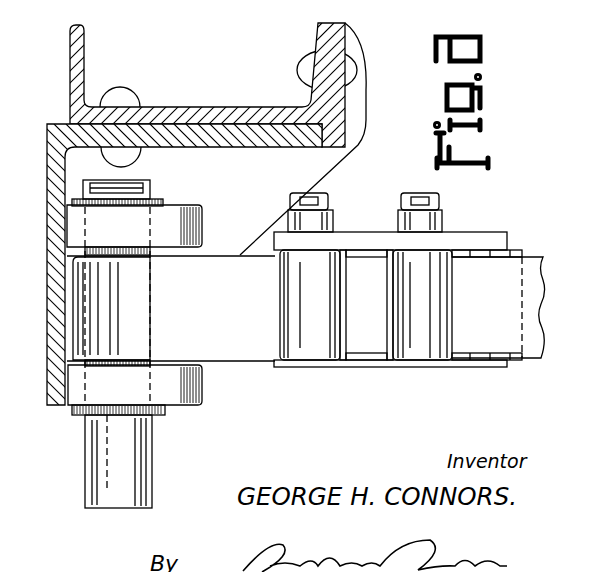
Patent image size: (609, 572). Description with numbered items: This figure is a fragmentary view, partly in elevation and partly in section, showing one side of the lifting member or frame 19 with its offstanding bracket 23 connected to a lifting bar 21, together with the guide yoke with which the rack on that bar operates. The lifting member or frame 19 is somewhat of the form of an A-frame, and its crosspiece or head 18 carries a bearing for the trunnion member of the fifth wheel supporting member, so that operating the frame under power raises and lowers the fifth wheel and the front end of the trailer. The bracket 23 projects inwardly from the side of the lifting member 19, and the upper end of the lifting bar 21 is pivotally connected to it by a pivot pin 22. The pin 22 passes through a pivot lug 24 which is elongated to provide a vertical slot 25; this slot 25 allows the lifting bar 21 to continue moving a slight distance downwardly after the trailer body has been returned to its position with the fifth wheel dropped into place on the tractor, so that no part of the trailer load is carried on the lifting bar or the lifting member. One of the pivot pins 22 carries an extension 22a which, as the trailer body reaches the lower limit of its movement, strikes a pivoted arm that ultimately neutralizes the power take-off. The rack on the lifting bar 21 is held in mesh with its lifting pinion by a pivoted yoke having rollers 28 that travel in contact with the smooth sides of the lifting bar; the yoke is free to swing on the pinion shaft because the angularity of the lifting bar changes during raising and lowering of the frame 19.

The crosspiece or head 18 is at (12, 29).
The lifting member or frame 19 is at (225, 113).
The lifting bar 21 is at (225, 345).
The pivot pin 22 is at (66, 248).
The extension 22a is at (115, 496).
The bracket 23 is at (50, 190).
The pivot lug 24 is at (193, 420).
The vertical slot 25 is at (178, 428).
The roller 28 is at (397, 306).